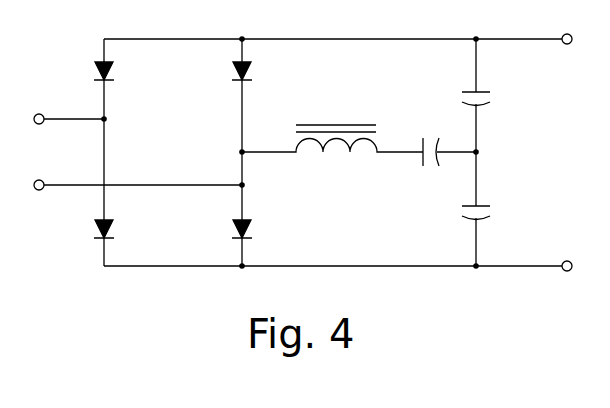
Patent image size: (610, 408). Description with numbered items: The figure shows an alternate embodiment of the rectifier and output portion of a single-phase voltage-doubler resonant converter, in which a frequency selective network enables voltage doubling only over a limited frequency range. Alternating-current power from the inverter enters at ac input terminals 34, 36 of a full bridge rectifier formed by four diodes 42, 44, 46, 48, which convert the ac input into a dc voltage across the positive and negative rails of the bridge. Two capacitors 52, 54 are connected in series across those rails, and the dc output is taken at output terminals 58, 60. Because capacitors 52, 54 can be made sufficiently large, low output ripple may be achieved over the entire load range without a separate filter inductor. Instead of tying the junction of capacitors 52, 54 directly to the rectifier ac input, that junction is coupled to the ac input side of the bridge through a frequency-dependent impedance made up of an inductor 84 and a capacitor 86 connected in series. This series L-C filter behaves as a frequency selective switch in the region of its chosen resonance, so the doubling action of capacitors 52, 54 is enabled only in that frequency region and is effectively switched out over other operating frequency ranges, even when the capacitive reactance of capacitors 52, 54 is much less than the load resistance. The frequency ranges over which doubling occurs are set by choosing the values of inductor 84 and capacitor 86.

The ac input terminal 34 is at (65, 118).
The ac input terminal 36 is at (65, 186).
The diode 42 is at (104, 98).
The diode 44 is at (104, 190).
The diode 46 is at (242, 105).
The diode 48 is at (244, 196).
The capacitor 52 is at (477, 82).
The capacitor 54 is at (477, 195).
The output terminal 58 is at (535, 38).
The output terminal 60 is at (535, 265).
The inductor 84 is at (315, 124).
The capacitor 86 is at (410, 150).